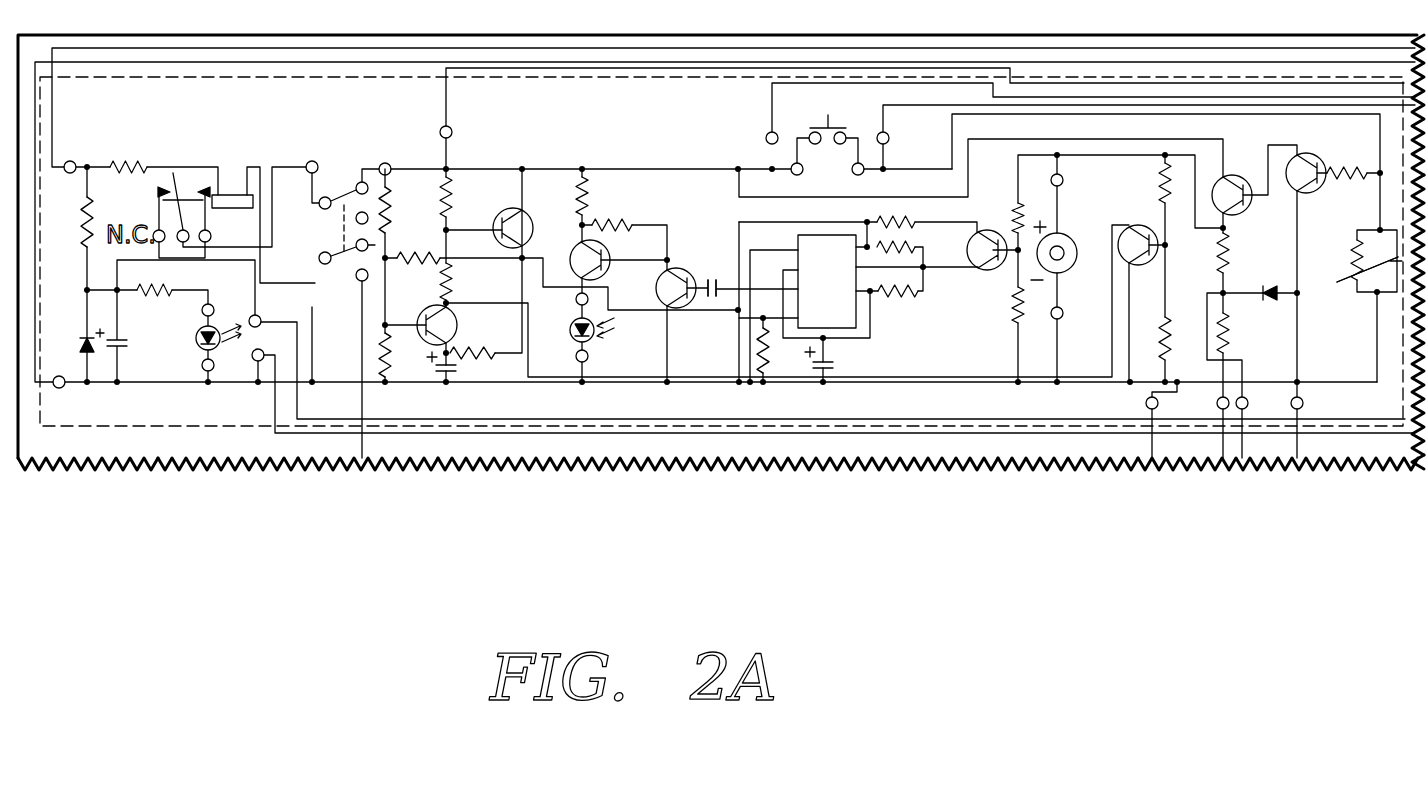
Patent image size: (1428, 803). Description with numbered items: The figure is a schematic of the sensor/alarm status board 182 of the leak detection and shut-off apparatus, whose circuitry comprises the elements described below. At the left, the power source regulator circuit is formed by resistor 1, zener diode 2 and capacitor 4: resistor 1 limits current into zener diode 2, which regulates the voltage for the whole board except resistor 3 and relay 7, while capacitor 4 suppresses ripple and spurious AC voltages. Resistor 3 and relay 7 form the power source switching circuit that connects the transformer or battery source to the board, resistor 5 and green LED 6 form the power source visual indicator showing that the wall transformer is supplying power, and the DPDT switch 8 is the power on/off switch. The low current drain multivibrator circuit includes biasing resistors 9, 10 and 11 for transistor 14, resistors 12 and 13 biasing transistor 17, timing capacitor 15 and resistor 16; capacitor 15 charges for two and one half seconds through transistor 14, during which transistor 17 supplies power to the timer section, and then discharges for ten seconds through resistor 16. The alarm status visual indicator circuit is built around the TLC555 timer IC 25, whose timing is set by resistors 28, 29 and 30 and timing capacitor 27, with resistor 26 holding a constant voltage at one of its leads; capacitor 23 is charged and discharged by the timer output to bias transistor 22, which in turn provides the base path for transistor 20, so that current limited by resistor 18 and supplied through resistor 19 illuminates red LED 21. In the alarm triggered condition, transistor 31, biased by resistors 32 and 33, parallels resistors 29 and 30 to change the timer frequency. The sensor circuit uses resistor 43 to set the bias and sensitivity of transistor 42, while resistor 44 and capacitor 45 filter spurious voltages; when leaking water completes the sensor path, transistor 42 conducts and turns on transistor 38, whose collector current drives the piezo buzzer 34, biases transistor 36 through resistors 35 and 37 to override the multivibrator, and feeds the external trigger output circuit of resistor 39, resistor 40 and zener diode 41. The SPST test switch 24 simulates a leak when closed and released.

The resistor 1 is at (99, 199).
The zener diode 2 is at (86, 336).
The resistor 3 is at (112, 163).
The capacitor 4 is at (128, 343).
The resistor 5 is at (160, 294).
The LED 6 is at (198, 346).
The relay 7 is at (237, 196).
The switch 8 is at (320, 255).
The resistor 9 is at (391, 228).
The resistor 10 is at (416, 266).
The resistor 11 is at (390, 372).
The resistor 12 is at (440, 213).
The resistor 13 is at (452, 284).
The transistor 14 is at (452, 322).
The capacitor 15 is at (458, 369).
The resistor 16 is at (468, 350).
The transistor 17 is at (505, 216).
The resistor 18 is at (578, 196).
The resistor 19 is at (600, 223).
The transistor 20 is at (608, 270).
The LED 21 is at (606, 330).
The transistor 22 is at (680, 268).
The capacitor 23 is at (712, 278).
The switch 24 is at (832, 127).
The IC 25 is at (798, 240).
The resistor 26 is at (757, 355).
The capacitor 27 is at (834, 365).
The resistor 28 is at (902, 300).
The resistor 29 is at (914, 244).
The resistor 30 is at (876, 220).
The transistor 31 is at (978, 270).
The resistor 32 is at (1012, 210).
The resistor 33 is at (1012, 320).
The piezo buzzer 34 is at (1065, 236).
The resistor 35 is at (1160, 188).
The transistor 36 is at (1142, 265).
The resistor 37 is at (1168, 328).
The transistor 38 is at (1236, 182).
The resistor 39 is at (1228, 252).
The resistor 40 is at (1229, 336).
The zener diode 41 is at (1264, 286).
The transistor 42 is at (1300, 192).
The resistor 43 is at (1360, 168).
The resistor 44 is at (1352, 262).
The capacitor 45 is at (1354, 288).
The sensor/alarm status board 182 is at (133, 80).